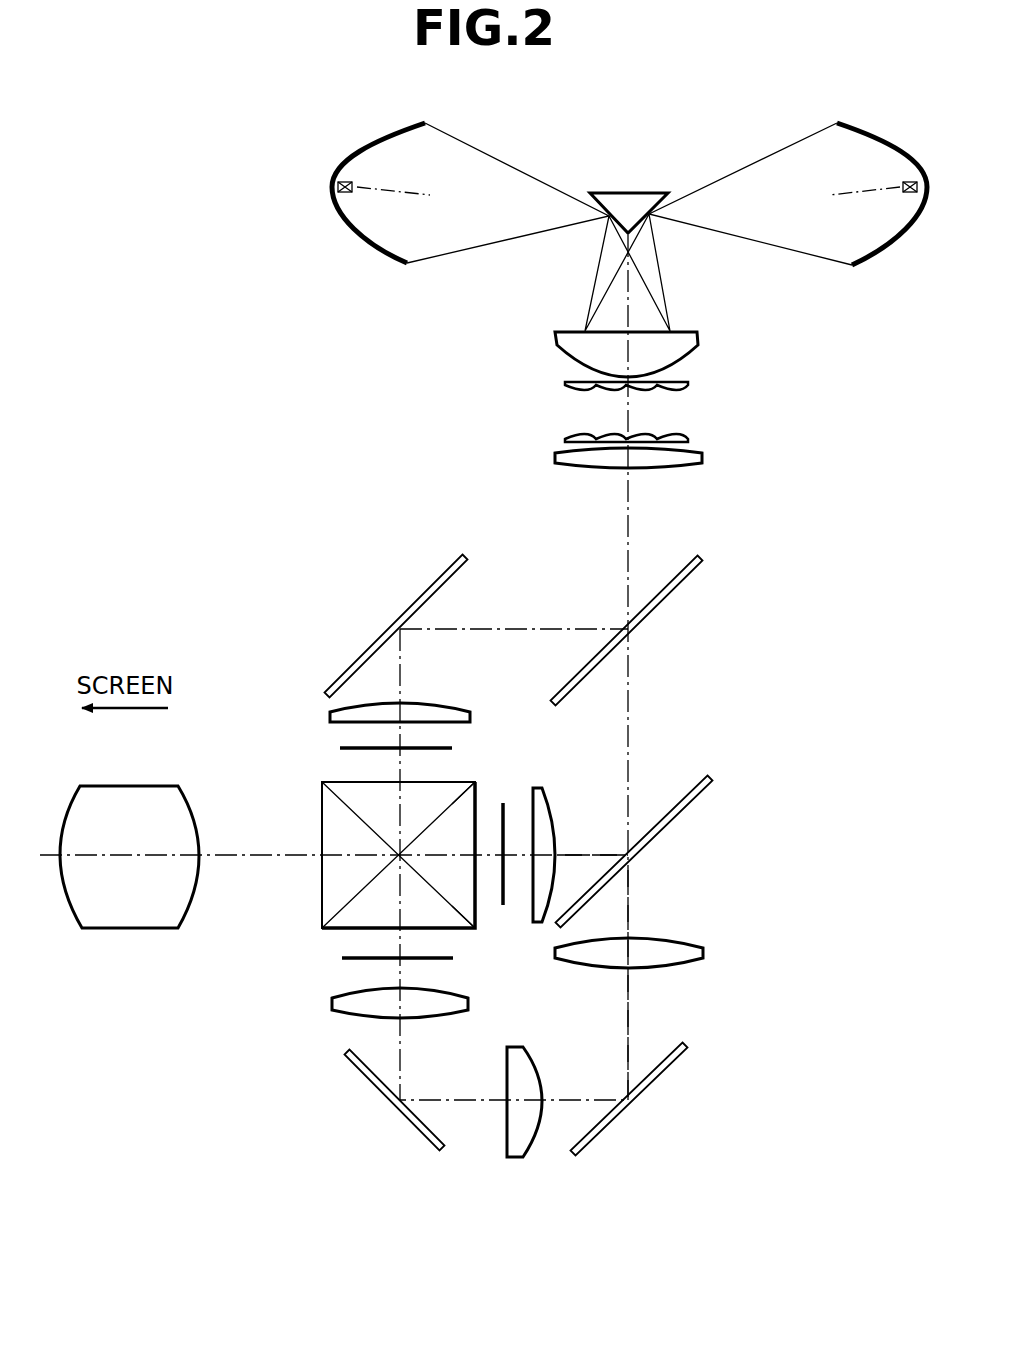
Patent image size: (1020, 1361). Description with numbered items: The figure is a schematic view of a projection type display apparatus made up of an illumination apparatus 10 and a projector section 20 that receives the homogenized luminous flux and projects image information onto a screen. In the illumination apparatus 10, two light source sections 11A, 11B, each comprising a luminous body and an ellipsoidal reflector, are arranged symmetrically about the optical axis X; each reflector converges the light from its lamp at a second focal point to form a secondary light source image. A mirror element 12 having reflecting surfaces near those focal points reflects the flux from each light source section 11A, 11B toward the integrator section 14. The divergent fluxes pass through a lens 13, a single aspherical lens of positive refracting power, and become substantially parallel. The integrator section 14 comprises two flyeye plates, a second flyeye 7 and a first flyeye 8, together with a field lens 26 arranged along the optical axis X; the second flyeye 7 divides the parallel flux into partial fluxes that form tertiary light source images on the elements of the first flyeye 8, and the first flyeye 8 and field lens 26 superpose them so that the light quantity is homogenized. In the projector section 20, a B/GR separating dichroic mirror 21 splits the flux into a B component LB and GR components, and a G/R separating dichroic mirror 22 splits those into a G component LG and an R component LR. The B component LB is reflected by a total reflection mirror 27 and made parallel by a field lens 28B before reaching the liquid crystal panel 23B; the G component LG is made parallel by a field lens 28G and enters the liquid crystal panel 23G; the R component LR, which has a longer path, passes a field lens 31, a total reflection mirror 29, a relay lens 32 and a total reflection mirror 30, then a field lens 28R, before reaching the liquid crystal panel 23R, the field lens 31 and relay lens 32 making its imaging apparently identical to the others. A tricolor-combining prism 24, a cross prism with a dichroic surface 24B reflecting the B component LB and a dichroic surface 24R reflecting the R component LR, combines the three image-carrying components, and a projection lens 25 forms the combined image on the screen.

The illumination apparatus 10 is at (605, 230).
The light source section 11A is at (450, 122).
The light source section 11B is at (807, 122).
The mirror element 12 is at (637, 197).
The lens 13 is at (697, 335).
The integrator section 14 is at (695, 405).
The second flyeye 7 is at (688, 385).
The first flyeye 8 is at (688, 436).
The field lens 26 is at (555, 458).
The projector section 20 is at (343, 502).
The B/GR separating dichroic mirror 21 is at (700, 563).
The G/R separating dichroic mirror 22 is at (692, 800).
The liquid crystal panel 23B is at (345, 746).
The liquid crystal panel 23G is at (506, 800).
The liquid crystal panel 23R is at (451, 960).
The tricolor-combining prism 24 is at (398, 852).
The dichroic surface 24B is at (453, 792).
The dichroic surface 24R is at (463, 910).
The projection lens 25 is at (138, 786).
The total reflection mirror 27 is at (428, 590).
The field lens 28B is at (453, 704).
The field lens 28G is at (553, 814).
The field lens 28R is at (332, 1007).
The total reflection mirror 29 is at (668, 1066).
The total reflection mirror 30 is at (352, 1065).
The field lens 31 is at (673, 968).
The relay lens 32 is at (530, 1073).
The optical axis X is at (628, 497).
The B component LB is at (530, 628).
The G component LG is at (572, 852).
The R component LR is at (630, 897).